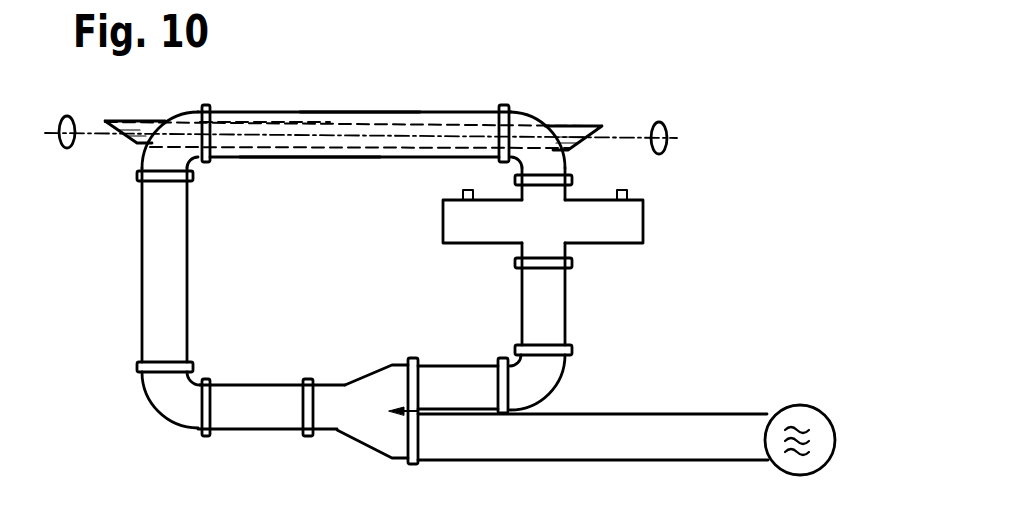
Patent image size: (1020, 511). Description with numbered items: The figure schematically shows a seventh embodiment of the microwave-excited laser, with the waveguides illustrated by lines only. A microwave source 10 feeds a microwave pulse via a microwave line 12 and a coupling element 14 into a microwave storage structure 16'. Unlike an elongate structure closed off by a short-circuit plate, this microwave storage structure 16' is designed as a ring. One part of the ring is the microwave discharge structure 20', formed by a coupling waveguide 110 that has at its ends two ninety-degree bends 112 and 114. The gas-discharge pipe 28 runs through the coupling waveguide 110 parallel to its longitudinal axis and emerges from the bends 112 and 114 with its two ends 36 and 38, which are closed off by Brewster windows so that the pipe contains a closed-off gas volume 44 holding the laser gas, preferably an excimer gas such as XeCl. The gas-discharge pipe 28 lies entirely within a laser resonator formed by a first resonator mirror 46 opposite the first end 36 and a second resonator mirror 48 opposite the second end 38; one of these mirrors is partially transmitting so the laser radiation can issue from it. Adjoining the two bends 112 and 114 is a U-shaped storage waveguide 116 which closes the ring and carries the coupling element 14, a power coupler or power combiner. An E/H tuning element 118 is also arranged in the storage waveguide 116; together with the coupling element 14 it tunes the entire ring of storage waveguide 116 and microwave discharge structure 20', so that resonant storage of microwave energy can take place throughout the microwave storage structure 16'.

The microwave source 10 is at (797, 411).
The microwave line 12 is at (690, 428).
The coupling element 14 is at (357, 373).
The microwave storage structure 16' is at (271, 370).
The microwave discharge structure 20' is at (352, 106).
The gas-discharge pipe 28 is at (445, 133).
The first end of gas-discharge pipe 36 is at (590, 126).
The second end of gas-discharge pipe 38 is at (128, 125).
The closed-off gas volume 44 is at (270, 137).
The first resonator mirror 46 is at (668, 150).
The second resonator mirror 48 is at (67, 150).
The coupling waveguide 110 is at (312, 116).
The 90° bend 112 is at (167, 137).
The 90° bend 114 is at (540, 140).
The storage waveguide 116 is at (150, 288).
The E/H tuning element 118 is at (606, 247).